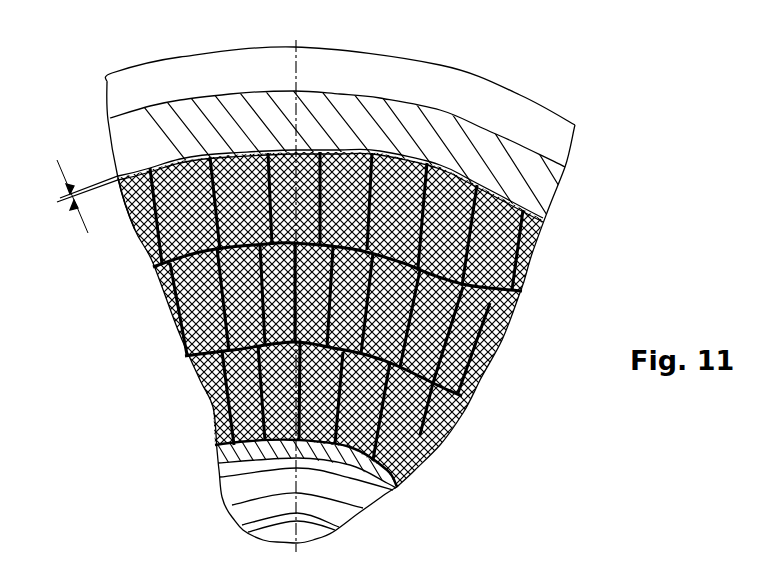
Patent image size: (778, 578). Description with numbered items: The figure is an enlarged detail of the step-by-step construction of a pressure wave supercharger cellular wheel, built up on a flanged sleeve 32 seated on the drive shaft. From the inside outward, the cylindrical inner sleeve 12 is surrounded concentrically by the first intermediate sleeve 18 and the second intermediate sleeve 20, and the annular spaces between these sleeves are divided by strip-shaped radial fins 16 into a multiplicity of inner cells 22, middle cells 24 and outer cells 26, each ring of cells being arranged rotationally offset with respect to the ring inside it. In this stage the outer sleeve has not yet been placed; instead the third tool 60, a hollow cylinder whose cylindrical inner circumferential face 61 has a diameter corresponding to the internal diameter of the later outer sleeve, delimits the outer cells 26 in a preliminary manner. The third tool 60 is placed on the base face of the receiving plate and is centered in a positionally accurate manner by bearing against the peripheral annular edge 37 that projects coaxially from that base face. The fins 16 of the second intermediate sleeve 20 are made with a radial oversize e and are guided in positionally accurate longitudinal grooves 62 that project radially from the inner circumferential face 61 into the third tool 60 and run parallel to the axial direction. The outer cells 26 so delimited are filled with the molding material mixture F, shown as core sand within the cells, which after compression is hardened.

The inner sleeve 12 is at (217, 452).
The fins 16 is at (137, 238).
The first intermediate sleeve 18 is at (192, 358).
The second intermediate sleeve 20 is at (150, 268).
The inner cells 22 is at (458, 427).
The middle cells 24 is at (490, 368).
The outer cells 26 is at (522, 287).
The flanged sleeve 32 is at (398, 480).
The annular edge 37 is at (557, 127).
The third tool 60 is at (127, 147).
The inner circumferential face 61 is at (125, 210).
The longitudinal grooves 62 is at (150, 172).
The oversize e is at (59, 196).
The molding material mixture F is at (530, 260).